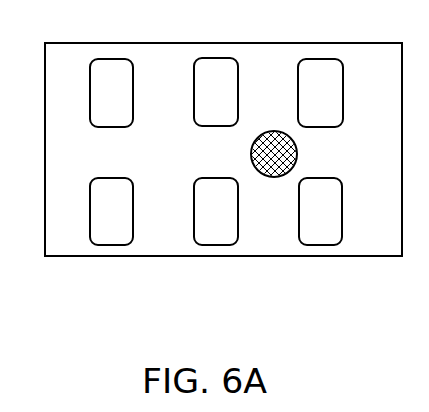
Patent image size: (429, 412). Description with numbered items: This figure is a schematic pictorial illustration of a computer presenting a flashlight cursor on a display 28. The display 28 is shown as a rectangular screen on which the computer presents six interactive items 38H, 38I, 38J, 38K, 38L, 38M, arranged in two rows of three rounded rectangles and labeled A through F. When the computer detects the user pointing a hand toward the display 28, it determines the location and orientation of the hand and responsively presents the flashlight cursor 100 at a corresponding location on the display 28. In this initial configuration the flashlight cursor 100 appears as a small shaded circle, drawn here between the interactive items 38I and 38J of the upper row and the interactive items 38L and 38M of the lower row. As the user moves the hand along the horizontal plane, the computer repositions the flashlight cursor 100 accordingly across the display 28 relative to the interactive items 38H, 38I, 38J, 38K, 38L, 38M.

The display 28 is at (393, 257).
The interactive item 38H is at (103, 60).
The interactive item 38I is at (219, 59).
The interactive item 38J is at (325, 60).
The interactive item 38K is at (112, 246).
The interactive item 38L is at (223, 246).
The interactive item 38M is at (330, 246).
The flashlight cursor 100 is at (251, 154).